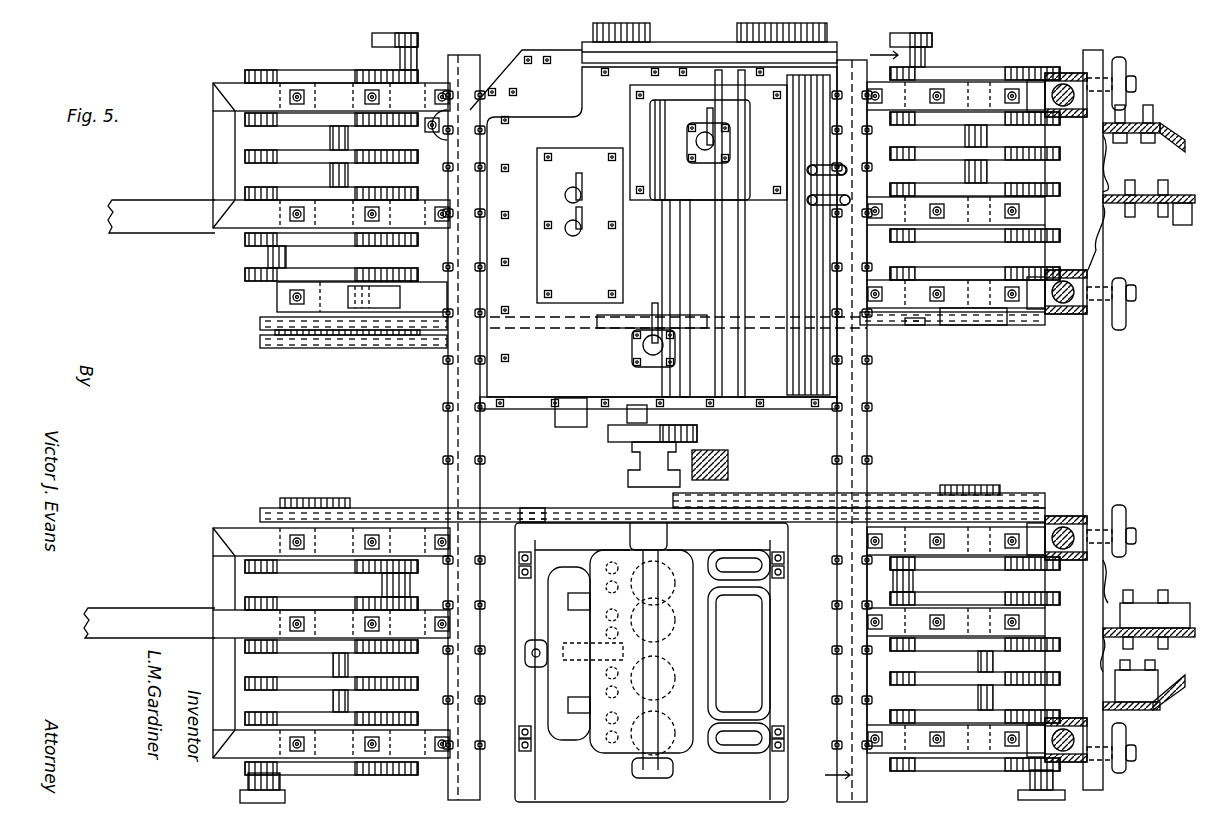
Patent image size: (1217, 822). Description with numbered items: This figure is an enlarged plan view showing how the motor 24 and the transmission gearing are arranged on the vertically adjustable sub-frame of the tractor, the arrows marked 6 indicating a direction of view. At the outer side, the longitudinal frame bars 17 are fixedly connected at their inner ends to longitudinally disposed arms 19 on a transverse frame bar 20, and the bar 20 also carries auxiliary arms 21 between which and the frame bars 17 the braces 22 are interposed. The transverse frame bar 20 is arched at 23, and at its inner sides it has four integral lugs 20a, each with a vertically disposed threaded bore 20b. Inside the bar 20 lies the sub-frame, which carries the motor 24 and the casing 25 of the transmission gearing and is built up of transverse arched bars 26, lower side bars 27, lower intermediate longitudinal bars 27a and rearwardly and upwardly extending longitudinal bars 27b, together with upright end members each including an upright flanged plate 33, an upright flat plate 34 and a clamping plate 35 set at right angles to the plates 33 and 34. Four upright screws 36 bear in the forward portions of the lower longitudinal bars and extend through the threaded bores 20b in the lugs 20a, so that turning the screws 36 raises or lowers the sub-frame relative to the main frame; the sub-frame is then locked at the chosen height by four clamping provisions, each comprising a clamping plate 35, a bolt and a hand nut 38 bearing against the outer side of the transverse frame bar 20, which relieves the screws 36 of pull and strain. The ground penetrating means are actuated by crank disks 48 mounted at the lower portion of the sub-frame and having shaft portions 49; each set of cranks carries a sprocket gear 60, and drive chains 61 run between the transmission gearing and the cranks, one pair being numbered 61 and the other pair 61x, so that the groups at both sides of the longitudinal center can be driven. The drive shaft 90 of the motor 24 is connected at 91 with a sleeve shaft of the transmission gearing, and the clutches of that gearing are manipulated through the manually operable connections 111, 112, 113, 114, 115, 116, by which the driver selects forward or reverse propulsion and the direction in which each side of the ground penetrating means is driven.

The section line 6 is at (855, 414).
The longitudinal frame bars 17 is at (1185, 195).
The longitudinally disposed arms 19 is at (1143, 212).
The transverse frame bar 20 is at (1105, 258).
The integral lugs 20a is at (1063, 108).
The threaded bores 20b is at (1135, 292).
The auxiliary arms 21 is at (1135, 120).
The braces 22 is at (1170, 130).
The arch of the transverse frame bar 23 is at (1093, 405).
The motor 24 is at (610, 758).
The casing of the transmission gearing 25 is at (668, 225).
The transverse arched bars 26 is at (450, 440).
The lower side bars 27 is at (428, 92).
The lower intermediate longitudinal bars 27a is at (323, 350).
The rearwardly and upwardly extending longitudinal bars 27b is at (155, 210).
The upright flanged plate 33 is at (1100, 165).
The upright flat plate 34 is at (1065, 75).
The clamping plate 35 is at (1028, 80).
The upright screws 36 is at (1075, 82).
The hand nut 38 is at (1122, 68).
The crank disks 48 is at (291, 78).
The shaft portions 49 is at (385, 52).
The sprocket gear 60 is at (278, 350).
The drive chains 61 is at (400, 348).
The drive belts 61x is at (530, 510).
The drive shaft of the motor 90 is at (640, 455).
The connection 91 is at (610, 437).
The manually operable connection 111 is at (566, 190).
The manually operable connection 112 is at (566, 226).
The manually operable connection 113 is at (712, 122).
The manually operable connection 114 is at (645, 338).
The manually operable connection 115 is at (855, 170).
The manually operable connection 116 is at (858, 210).